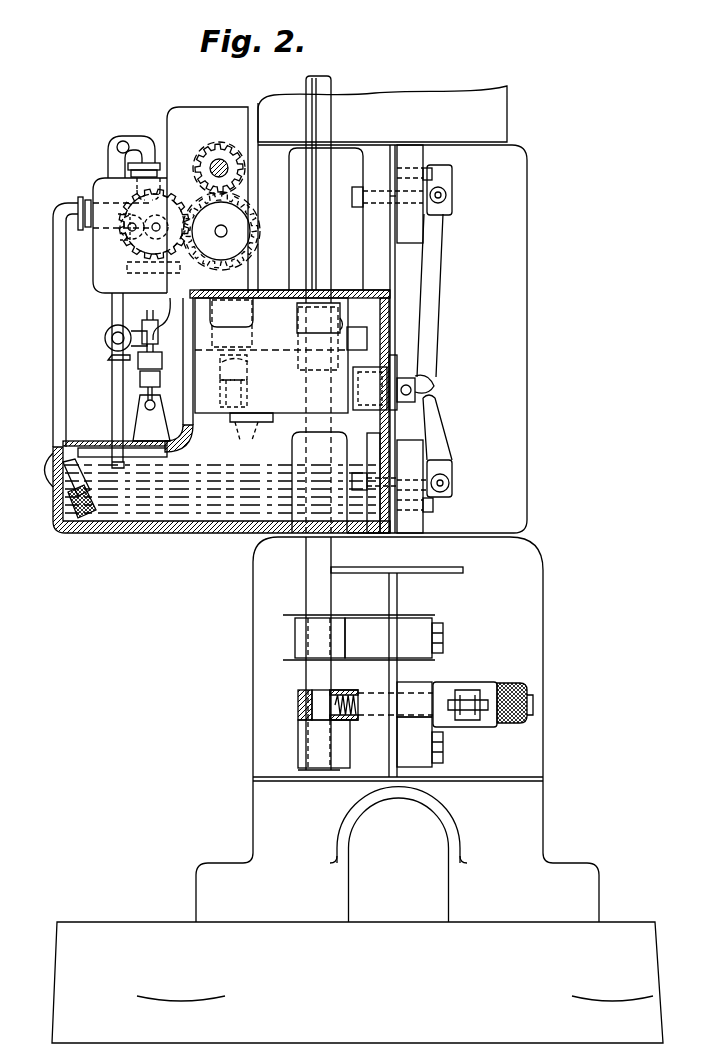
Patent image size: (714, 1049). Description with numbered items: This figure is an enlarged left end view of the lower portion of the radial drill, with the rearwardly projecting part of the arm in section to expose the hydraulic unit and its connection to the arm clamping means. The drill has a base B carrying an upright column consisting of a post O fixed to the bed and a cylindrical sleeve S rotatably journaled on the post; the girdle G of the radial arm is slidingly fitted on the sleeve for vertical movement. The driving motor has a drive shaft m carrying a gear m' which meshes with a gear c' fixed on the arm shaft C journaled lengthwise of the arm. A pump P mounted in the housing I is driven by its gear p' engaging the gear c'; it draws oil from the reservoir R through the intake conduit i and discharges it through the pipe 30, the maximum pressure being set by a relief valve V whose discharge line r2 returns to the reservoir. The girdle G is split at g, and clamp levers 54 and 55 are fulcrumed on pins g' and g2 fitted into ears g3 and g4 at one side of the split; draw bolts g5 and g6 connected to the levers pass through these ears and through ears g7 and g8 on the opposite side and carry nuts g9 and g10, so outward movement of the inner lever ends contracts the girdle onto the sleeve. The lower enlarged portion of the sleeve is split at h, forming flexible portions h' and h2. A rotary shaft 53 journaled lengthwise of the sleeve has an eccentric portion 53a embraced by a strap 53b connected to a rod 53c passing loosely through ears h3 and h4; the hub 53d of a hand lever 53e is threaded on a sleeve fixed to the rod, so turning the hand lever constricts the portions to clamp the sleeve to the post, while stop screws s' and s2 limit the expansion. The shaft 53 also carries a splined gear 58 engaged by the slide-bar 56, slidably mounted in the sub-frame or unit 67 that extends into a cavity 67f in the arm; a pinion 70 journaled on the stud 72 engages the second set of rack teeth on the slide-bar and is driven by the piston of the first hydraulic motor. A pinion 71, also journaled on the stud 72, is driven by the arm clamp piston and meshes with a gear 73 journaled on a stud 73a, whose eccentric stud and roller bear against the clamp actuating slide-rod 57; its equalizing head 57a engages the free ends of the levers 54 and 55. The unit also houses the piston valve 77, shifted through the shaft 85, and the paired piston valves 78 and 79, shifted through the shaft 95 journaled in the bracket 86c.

The base B is at (357, 982).
The post O is at (543, 810).
The sleeve S is at (508, 113).
The girdle G is at (528, 318).
The rotary shaft 53 is at (331, 113).
The housing I is at (196, 107).
The drive shaft m is at (219, 155).
The gear m' is at (210, 160).
The arm shaft C is at (224, 230).
The gear c' is at (230, 231).
The pump P is at (108, 243).
The pump gear p' is at (153, 278).
The pipe 30 is at (137, 139).
The intake conduit i is at (52, 318).
The relief valve V is at (104, 338).
The shaft 85 is at (146, 333).
The piston valve 77 is at (163, 318).
The piston valve 78 is at (138, 361).
The piston valve 79 is at (140, 380).
The shaft 95 is at (145, 406).
The bracket 86c is at (151, 418).
The discharge line r2 is at (108, 446).
The sub-frame 67 is at (214, 430).
The cavity 67f is at (274, 293).
The reservoir R is at (152, 510).
The pinion 70 is at (250, 340).
The pinion 71 is at (216, 385).
The stud 72 is at (228, 368).
The gear 73 is at (262, 391).
The stud 73a is at (251, 434).
The slide-bar 56 is at (368, 340).
The gear 58 is at (347, 327).
The slide-rod 57 is at (300, 412).
The equalizing head 57a is at (420, 378).
The split g is at (402, 321).
The ear g3 is at (418, 148).
The pin g' is at (438, 183).
The nut g9 is at (356, 208).
The draw bolt g5 is at (392, 200).
The ear g7 is at (377, 173).
The clamp lever 54 is at (444, 249).
The clamp lever 55 is at (440, 441).
The draw bolt g6 is at (396, 479).
The pin g2 is at (433, 511).
The ear g4 is at (416, 534).
The ear g8 is at (374, 440).
The nut g10 is at (374, 534).
The split h is at (397, 672).
The flexible portion h' is at (359, 628).
The flexible portion h2 is at (434, 659).
The stop screw s' is at (452, 628).
The strap 53b is at (298, 693).
The eccentric portion 53a is at (300, 711).
The rod 53c is at (392, 697).
The ear h3 is at (394, 715).
The ear h4 is at (414, 742).
The stop screw s2 is at (445, 760).
The hub 53d is at (470, 727).
The hand lever 53e is at (538, 700).